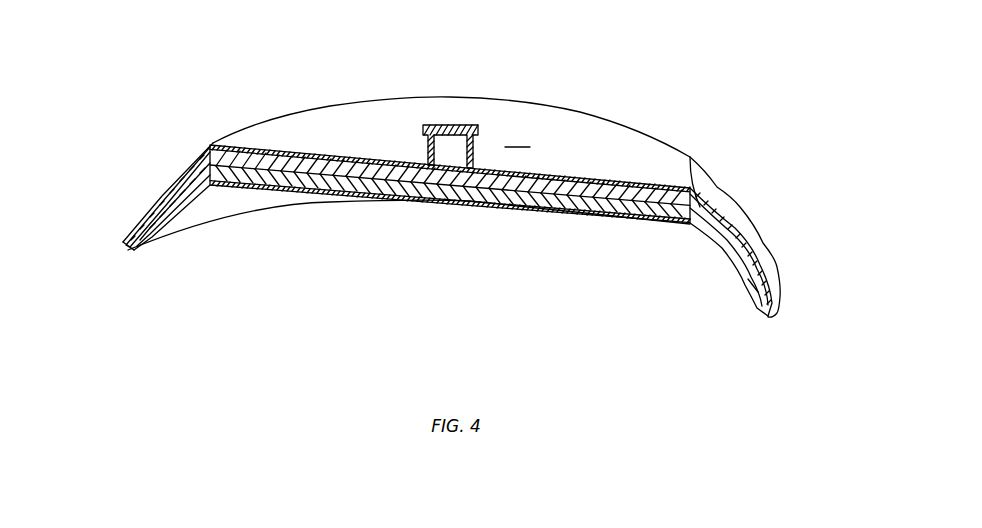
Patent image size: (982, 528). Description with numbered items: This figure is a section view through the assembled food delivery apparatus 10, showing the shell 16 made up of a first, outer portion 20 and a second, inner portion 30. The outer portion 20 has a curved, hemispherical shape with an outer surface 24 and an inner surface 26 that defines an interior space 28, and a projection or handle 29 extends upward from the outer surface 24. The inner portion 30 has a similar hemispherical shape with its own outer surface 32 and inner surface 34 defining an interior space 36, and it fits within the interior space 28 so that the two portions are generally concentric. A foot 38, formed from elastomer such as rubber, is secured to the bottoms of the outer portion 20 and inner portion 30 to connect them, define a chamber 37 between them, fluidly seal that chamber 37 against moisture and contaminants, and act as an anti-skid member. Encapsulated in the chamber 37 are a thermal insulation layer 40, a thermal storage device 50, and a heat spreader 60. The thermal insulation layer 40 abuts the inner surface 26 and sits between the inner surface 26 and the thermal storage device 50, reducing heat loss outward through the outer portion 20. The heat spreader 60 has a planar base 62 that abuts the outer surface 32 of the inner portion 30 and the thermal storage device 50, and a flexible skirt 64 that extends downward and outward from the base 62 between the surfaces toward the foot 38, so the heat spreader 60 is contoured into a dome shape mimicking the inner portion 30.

The food delivery apparatus 10 is at (762, 107).
The shell 16 is at (755, 241).
The outer portion 20 is at (576, 137).
The outer surface 24 is at (517, 139).
The inner surface 26 is at (722, 260).
The interior space 28 is at (710, 219).
The handle 29 is at (458, 124).
The inner portion 30 is at (460, 191).
The outer surface 32 is at (690, 210).
The inner surface 34 is at (194, 210).
The interior space 36 is at (255, 197).
The chamber 37 is at (738, 253).
The foot 38 is at (197, 223).
The thermal insulation layer 40 is at (370, 163).
The thermal storage device 50 is at (350, 182).
The heat spreader 60 is at (745, 290).
The base 62 is at (548, 208).
The skirt 64 is at (747, 278).